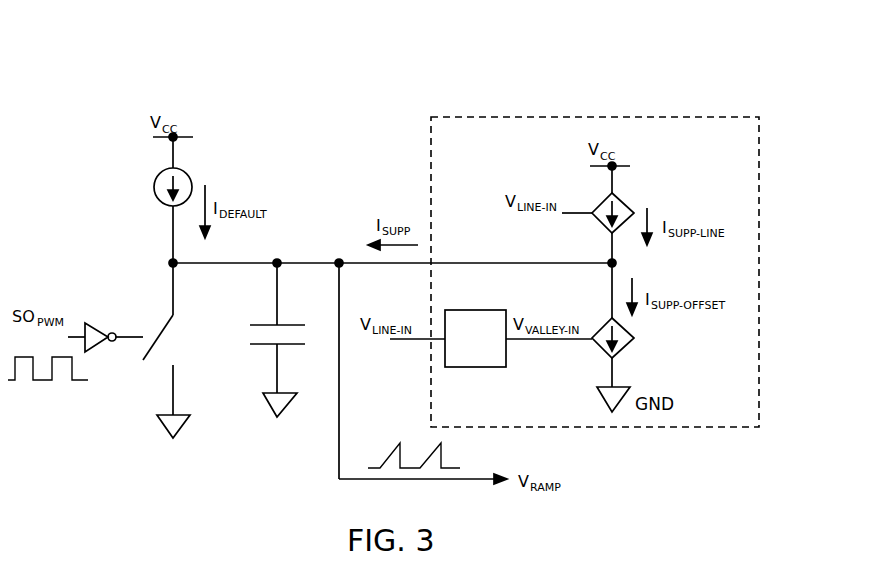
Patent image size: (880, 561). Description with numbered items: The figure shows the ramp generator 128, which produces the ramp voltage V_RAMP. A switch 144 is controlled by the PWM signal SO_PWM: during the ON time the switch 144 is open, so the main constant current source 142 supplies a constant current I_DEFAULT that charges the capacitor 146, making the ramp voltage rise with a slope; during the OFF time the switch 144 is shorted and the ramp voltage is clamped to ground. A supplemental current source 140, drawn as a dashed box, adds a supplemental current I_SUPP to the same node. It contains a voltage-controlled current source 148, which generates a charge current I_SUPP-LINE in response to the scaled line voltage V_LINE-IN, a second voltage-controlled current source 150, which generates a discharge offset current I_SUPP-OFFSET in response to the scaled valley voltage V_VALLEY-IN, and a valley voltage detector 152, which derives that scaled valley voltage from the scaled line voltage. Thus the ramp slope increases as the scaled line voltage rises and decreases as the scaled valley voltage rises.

The ramp generator 128 is at (218, 96).
The supplemental current source 140 is at (478, 114).
The main constant current source 142 is at (154, 188).
The switch 144 is at (180, 343).
The capacitor 146 is at (248, 333).
The voltage-controlled current source 148 is at (628, 197).
The voltage-controlled current source 150 is at (634, 338).
The valley voltage detector 152 is at (489, 350).